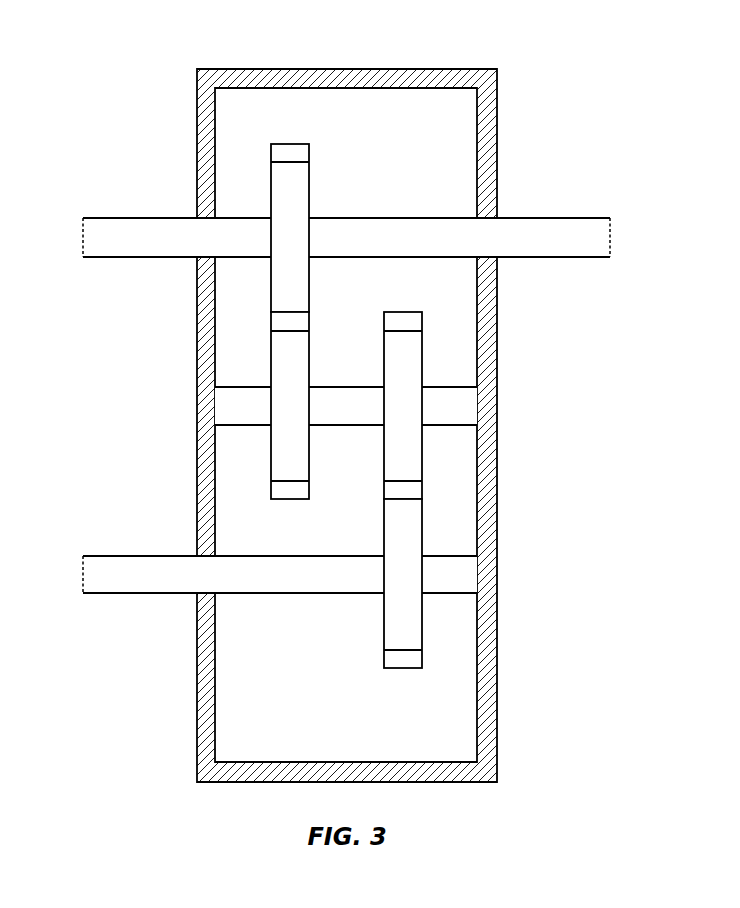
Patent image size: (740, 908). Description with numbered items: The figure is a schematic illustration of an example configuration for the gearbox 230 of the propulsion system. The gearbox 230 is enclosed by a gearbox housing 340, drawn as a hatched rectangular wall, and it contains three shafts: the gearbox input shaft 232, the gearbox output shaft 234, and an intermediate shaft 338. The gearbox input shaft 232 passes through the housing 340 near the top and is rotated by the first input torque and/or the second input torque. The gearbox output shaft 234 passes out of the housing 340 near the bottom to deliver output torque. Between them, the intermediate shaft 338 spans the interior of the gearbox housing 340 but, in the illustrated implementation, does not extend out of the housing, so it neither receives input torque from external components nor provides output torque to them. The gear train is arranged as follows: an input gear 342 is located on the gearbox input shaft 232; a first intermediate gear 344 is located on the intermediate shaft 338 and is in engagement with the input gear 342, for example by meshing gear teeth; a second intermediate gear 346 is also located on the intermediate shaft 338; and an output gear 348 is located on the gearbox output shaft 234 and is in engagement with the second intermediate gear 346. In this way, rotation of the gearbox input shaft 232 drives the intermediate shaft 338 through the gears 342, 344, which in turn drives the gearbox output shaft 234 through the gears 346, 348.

The gearbox 230 is at (149, 97).
The gearbox input shaft 232 is at (422, 217).
The gearbox output shaft 234 is at (270, 594).
The intermediate shaft 338 is at (451, 387).
The gearbox housing 340 is at (498, 492).
The input gear 342 is at (309, 182).
The first intermediate gear 344 is at (310, 361).
The second intermediate gear 346 is at (384, 450).
The output gear 348 is at (384, 526).